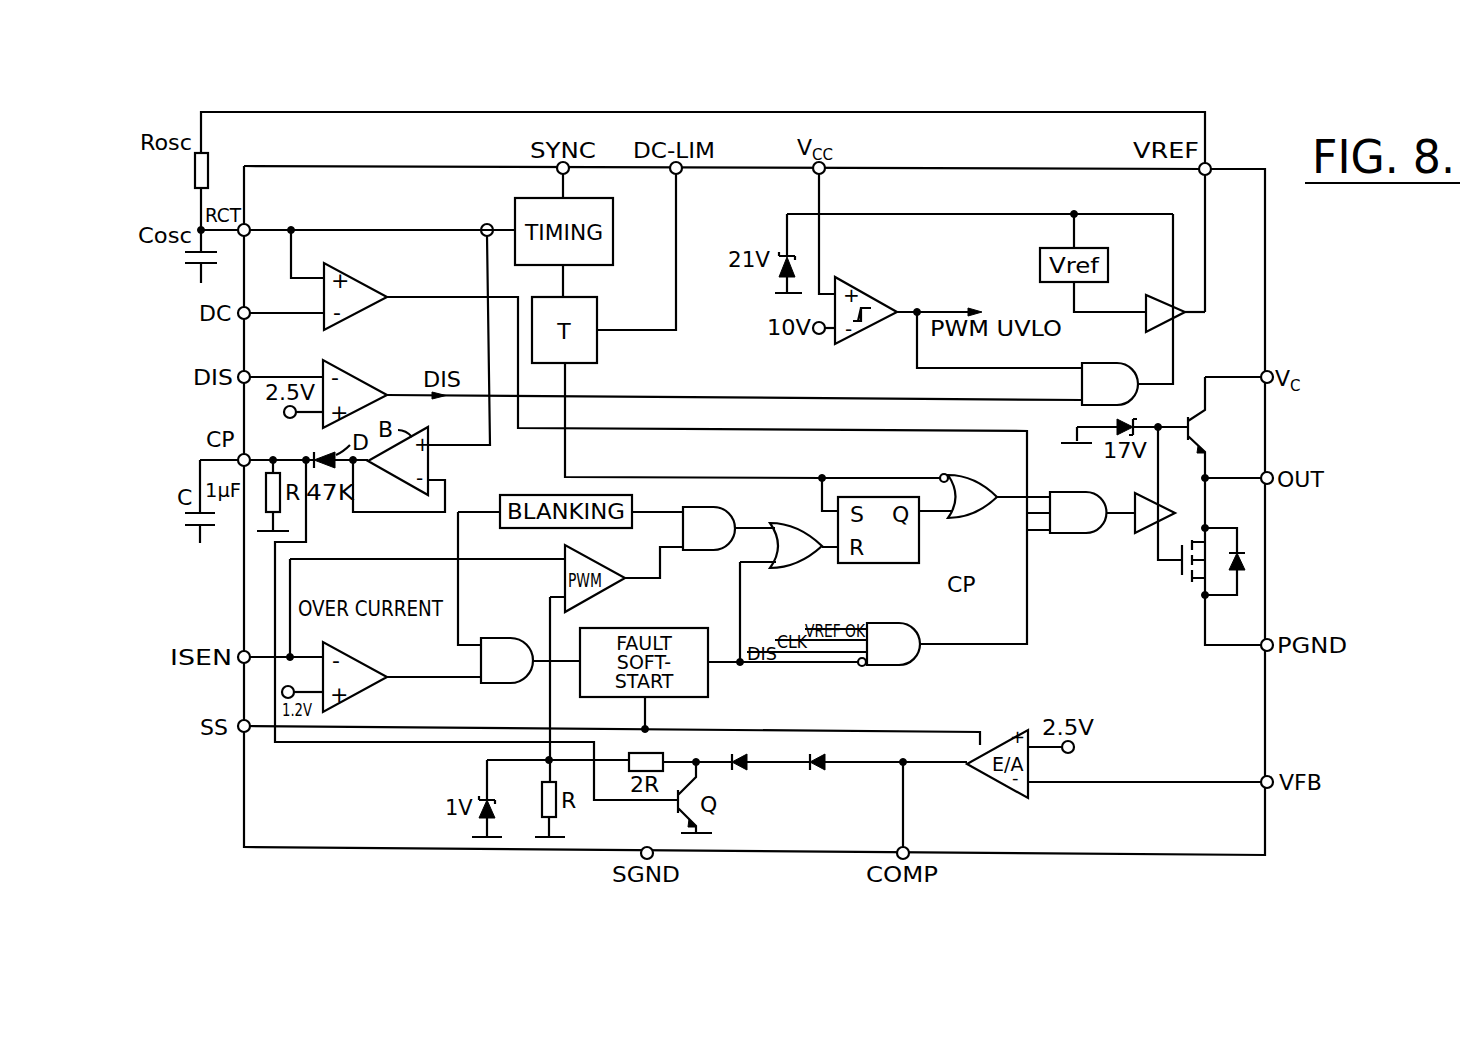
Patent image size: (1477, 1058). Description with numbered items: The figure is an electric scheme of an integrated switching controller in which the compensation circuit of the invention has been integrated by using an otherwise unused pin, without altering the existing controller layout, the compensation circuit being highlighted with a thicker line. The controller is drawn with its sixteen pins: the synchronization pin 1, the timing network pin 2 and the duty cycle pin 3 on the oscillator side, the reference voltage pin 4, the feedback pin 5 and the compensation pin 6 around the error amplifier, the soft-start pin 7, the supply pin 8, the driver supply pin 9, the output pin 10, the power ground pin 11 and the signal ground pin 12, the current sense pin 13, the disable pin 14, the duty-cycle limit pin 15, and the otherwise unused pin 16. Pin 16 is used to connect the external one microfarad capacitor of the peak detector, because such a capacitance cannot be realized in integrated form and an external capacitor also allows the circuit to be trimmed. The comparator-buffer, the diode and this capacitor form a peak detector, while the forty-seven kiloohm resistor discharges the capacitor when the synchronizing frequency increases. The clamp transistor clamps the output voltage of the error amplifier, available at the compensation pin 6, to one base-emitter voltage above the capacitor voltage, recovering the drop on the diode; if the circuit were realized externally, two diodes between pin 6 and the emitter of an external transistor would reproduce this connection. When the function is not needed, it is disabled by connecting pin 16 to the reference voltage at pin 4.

The SYNC pin 1 is at (554, 179).
The RCT pin 2 is at (253, 219).
The DC pin 3 is at (253, 302).
The pin 4 (reference voltage Vref pin) 4 is at (1195, 180).
The VFB pin 5 is at (1260, 770).
The pin 6 (Comp pin) 6 is at (901, 838).
The SS pin 7 is at (251, 737).
The VCC pin 8 is at (810, 179).
The VC pin 9 is at (1259, 365).
The OUT pin 10 is at (1254, 466).
The PGND pin 11 is at (1254, 633).
The SGND pin 12 is at (647, 838).
The ISEN pin 13 is at (255, 646).
The DIS pin 14 is at (259, 366).
The DC-LIM pin 15 is at (661, 179).
The pin 16 (unused pin for external capacitor) 16 is at (261, 448).